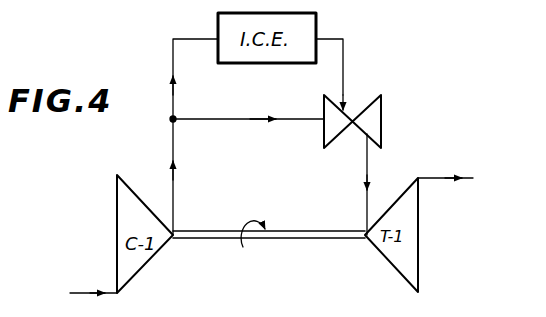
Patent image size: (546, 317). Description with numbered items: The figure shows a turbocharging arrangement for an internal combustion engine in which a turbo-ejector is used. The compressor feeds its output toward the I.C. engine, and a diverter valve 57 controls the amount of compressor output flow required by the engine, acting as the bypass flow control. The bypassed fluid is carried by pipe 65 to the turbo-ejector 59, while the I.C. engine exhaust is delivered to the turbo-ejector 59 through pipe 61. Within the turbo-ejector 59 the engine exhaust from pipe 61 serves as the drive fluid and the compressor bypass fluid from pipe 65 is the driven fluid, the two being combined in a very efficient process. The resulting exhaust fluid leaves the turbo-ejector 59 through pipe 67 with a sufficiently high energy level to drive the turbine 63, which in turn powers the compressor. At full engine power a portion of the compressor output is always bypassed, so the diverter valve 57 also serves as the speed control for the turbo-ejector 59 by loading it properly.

The diverter valve 57 is at (171, 120).
The turbo-ejector 59 is at (374, 120).
The pipe 61 is at (345, 63).
The turbine 63 is at (418, 200).
The pipe 65 is at (258, 97).
The pipe 67 is at (367, 167).